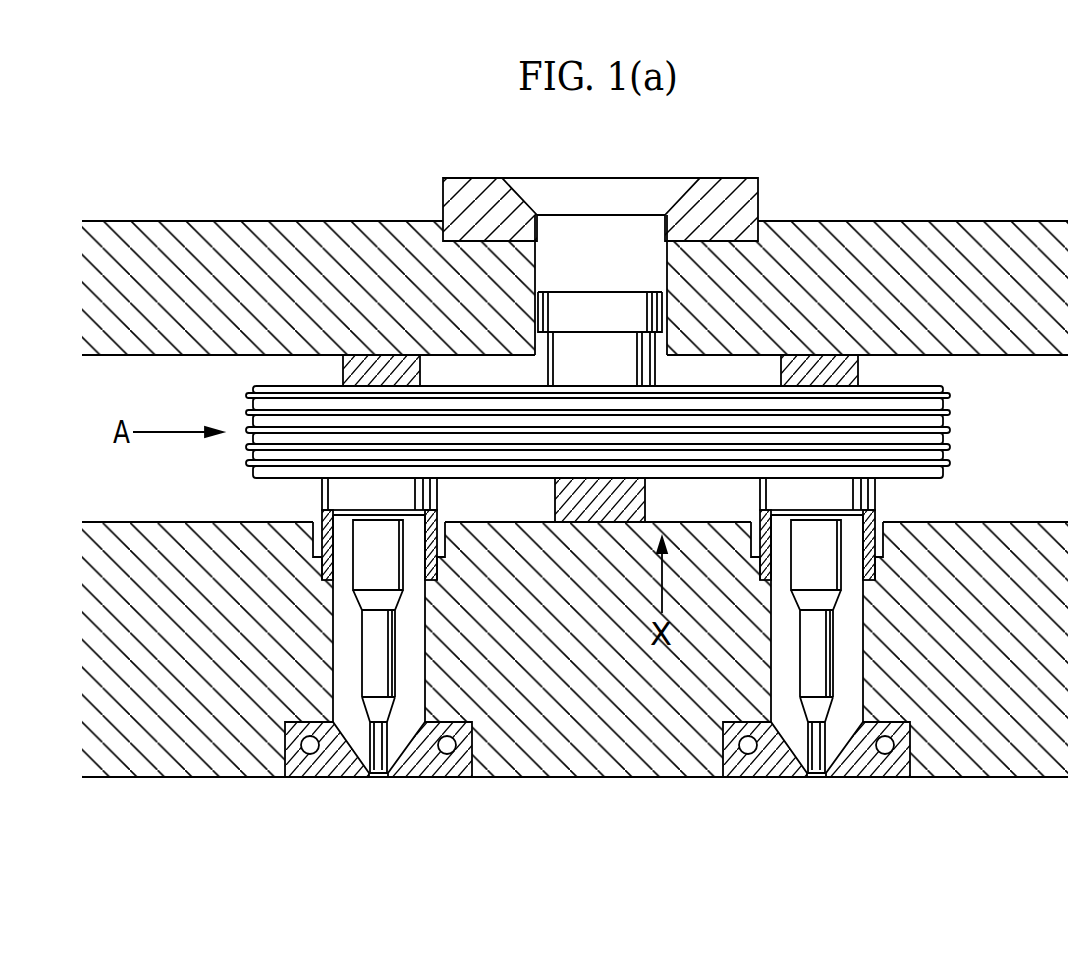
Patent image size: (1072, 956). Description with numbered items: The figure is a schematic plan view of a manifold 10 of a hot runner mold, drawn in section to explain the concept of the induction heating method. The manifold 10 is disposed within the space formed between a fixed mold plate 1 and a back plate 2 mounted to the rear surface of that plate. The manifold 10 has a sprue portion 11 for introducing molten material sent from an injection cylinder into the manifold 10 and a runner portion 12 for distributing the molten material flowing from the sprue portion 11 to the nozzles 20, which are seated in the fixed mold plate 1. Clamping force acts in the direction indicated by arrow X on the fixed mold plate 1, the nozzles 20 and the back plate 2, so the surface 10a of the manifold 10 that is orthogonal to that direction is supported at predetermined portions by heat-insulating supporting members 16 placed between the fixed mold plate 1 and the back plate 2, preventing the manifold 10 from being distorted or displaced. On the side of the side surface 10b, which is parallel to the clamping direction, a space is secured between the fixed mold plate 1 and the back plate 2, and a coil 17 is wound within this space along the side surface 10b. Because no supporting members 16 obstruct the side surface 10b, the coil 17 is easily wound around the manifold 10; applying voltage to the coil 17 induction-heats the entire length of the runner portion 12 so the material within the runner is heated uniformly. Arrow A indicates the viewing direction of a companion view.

The fixed mold plate 1 is at (193, 730).
The back plate 2 is at (305, 267).
The manifold 10 is at (599, 336).
The surface of the manifold 10a is at (298, 480).
The side surface of the manifold 10b is at (502, 390).
The sprue portion 11 is at (630, 313).
The runner portion 12 is at (442, 390).
The heat-insulating supporting member 16 is at (342, 365).
The coil 17 is at (975, 433).
The nozzle 20 is at (365, 677).